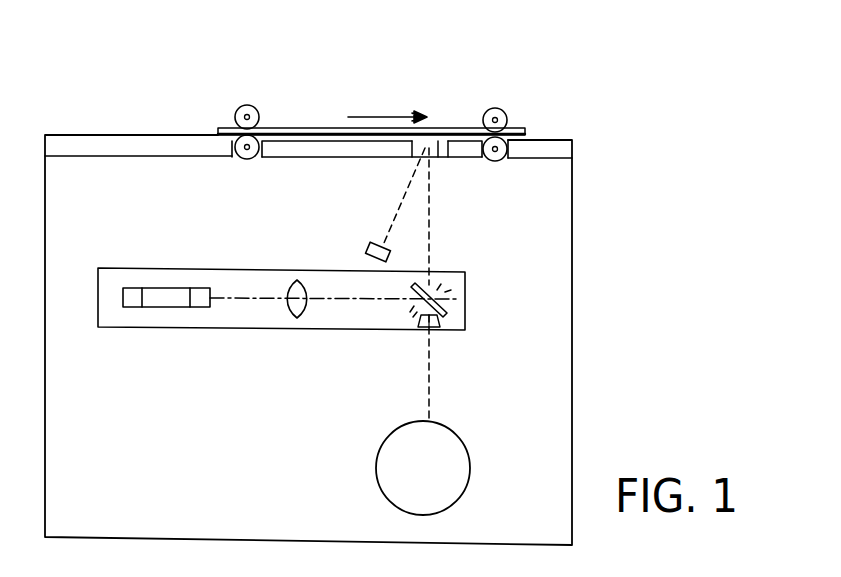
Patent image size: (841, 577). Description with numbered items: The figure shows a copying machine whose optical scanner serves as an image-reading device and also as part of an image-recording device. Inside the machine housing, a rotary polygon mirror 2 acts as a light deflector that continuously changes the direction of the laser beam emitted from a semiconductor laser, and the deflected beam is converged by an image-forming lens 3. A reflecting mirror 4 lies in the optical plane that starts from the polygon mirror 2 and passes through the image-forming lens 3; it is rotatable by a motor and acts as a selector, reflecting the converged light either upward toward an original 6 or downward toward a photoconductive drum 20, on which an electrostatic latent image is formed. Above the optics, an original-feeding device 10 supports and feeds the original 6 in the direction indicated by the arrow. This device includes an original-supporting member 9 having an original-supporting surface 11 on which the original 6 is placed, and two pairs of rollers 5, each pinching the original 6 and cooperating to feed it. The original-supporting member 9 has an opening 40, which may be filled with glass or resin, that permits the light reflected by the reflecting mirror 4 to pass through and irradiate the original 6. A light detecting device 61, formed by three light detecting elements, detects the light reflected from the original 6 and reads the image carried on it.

The original-supporting member 9 is at (573, 153).
The original-supporting surface 11 is at (552, 138).
The original 6 is at (297, 128).
The original-feeding device 10 is at (523, 110).
The rollers 5 is at (256, 109).
The opening 40 is at (440, 157).
The rotary polygon mirror 2 is at (178, 283).
The image-forming lens 3 is at (296, 320).
The reflecting mirror 4 is at (452, 300).
The light detecting device 61 is at (368, 244).
The photoconductive drum 20 is at (456, 432).